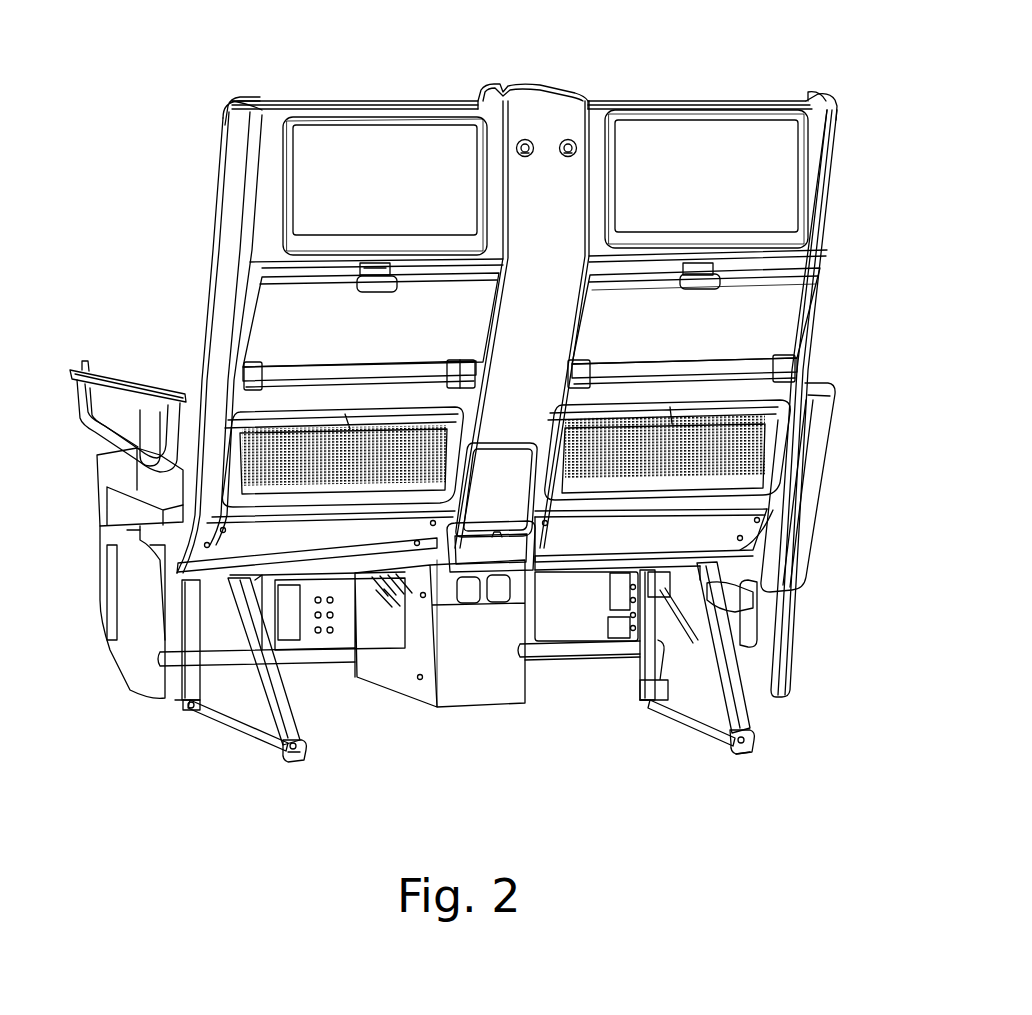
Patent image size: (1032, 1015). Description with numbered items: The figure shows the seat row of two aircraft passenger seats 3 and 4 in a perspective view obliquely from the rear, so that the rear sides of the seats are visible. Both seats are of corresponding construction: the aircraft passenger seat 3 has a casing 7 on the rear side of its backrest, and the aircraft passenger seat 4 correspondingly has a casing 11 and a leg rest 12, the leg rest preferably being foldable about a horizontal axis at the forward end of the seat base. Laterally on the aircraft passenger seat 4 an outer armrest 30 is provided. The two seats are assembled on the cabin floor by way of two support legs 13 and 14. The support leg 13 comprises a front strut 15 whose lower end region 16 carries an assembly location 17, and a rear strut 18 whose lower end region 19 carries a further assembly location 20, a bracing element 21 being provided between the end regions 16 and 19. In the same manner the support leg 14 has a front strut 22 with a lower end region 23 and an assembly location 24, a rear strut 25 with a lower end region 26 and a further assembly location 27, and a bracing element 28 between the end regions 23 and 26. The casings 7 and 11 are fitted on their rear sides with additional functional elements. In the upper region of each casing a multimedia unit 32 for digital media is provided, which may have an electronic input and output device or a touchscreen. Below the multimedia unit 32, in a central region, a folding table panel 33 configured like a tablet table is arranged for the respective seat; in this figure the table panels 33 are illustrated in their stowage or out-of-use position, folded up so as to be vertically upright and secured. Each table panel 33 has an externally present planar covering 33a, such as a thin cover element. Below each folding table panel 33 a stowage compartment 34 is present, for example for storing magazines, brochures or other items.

The aircraft passenger seat 3 is at (719, 86).
The aircraft passenger seat 4 is at (381, 86).
The casing 7 is at (838, 140).
The casing 11 is at (248, 102).
The leg rest 12 is at (104, 598).
The support leg 13 is at (723, 688).
The support leg 14 is at (247, 703).
The front strut 15 is at (640, 688).
The lower end region 16 is at (632, 704).
The assembly location 17 is at (645, 702).
The rear strut 18 is at (717, 668).
The lower end region 19 is at (752, 745).
The assembly location 20 is at (732, 742).
The bracing element 21 is at (692, 722).
The front strut 22 is at (178, 686).
The lower end region 23 is at (171, 704).
The assembly location 24 is at (188, 708).
The rear strut 25 is at (277, 692).
The lower end region 26 is at (311, 748).
The assembly location 27 is at (289, 748).
The bracing element 28 is at (233, 728).
The outer armrest 30 is at (108, 362).
The multimedia unit 32 is at (399, 191).
The folding table panel 33 is at (290, 316).
The planar covering 33a is at (782, 330).
The stowage compartment 34 is at (228, 403).